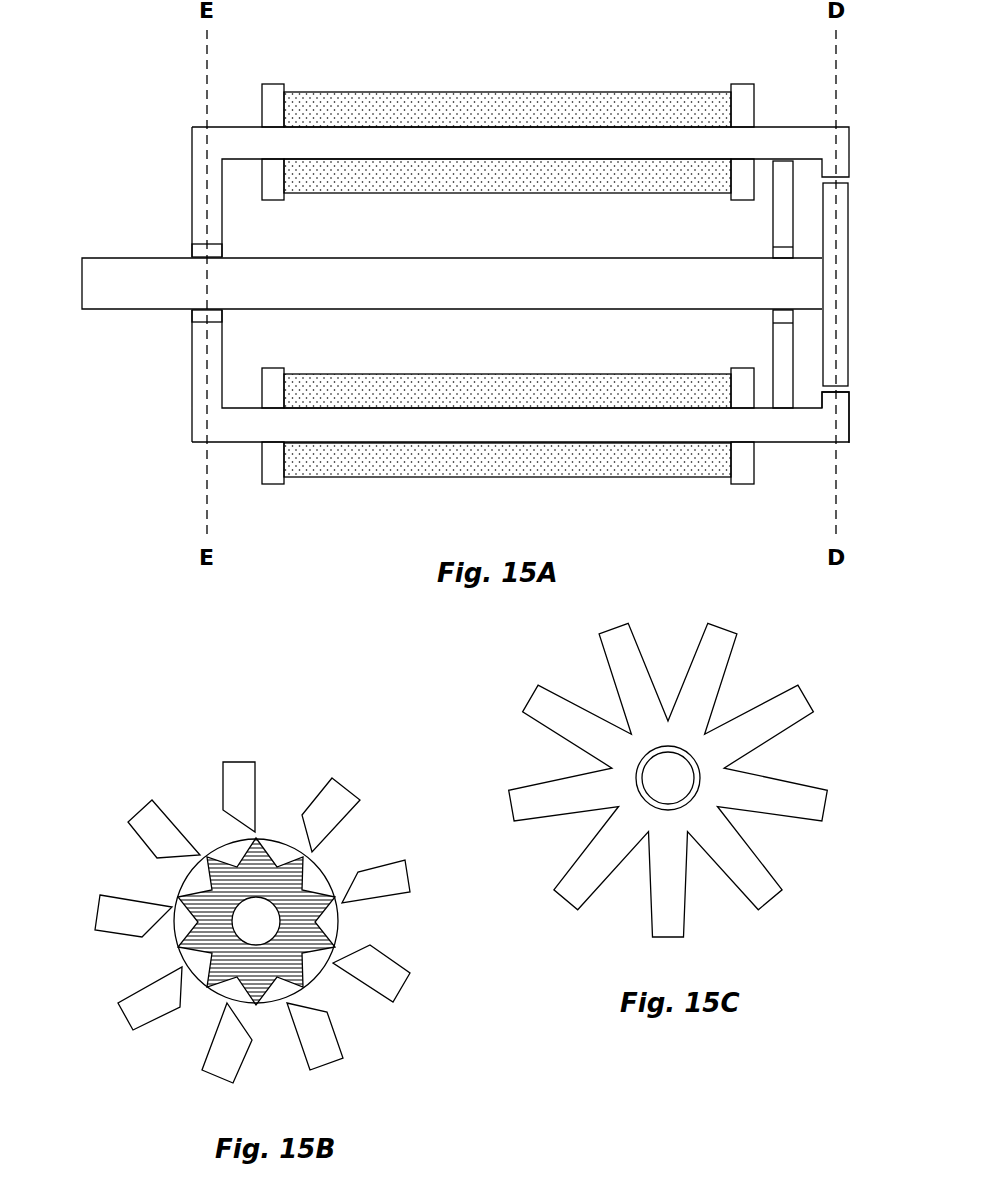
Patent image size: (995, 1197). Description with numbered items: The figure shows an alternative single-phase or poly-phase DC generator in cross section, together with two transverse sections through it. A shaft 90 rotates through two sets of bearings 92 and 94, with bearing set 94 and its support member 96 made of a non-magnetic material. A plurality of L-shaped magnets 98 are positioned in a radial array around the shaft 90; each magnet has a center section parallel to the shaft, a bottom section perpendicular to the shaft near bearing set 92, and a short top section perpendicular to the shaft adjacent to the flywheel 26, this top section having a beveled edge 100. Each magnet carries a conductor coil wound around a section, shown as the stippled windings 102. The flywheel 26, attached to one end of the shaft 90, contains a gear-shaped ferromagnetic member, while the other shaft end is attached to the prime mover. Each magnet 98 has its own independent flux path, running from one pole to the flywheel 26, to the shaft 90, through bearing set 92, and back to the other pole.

In FIG. 15A, the flywheel 26 is at (843, 300).
In FIG. 15B, the flywheel 26 is at (345, 862).
In FIG. 15A, the shaft 90 is at (105, 290).
In FIG. 15A, the bearing set 92 is at (205, 247).
In FIG. 15C, the bearing set 92 is at (644, 800).
In FIG. 15A, the bearing set 94 is at (775, 312).
In FIG. 15A, the support member 96 is at (782, 202).
In FIG. 15A, the L-shaped magnet 98 is at (745, 148).
In FIG. 15C, the L-shaped magnet 98 is at (630, 658).
In FIG. 15A, the beveled edge 100 is at (842, 395).
In FIG. 15B, the beveled edge 100 is at (245, 785).
In FIG. 15A, the windings 102 is at (383, 97).